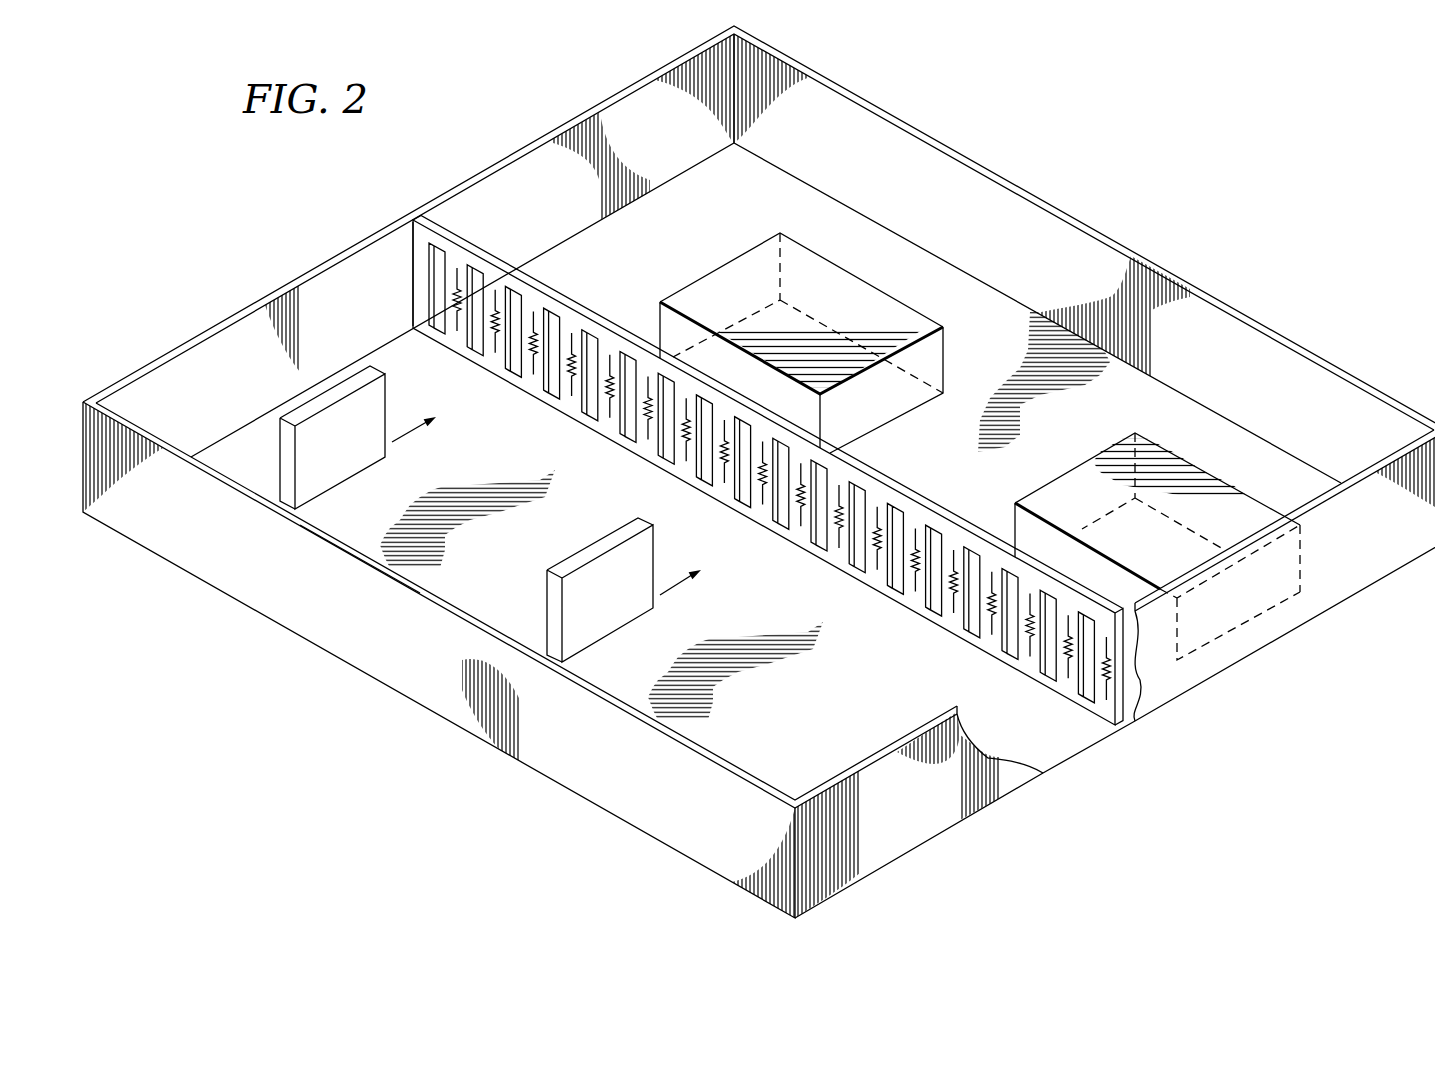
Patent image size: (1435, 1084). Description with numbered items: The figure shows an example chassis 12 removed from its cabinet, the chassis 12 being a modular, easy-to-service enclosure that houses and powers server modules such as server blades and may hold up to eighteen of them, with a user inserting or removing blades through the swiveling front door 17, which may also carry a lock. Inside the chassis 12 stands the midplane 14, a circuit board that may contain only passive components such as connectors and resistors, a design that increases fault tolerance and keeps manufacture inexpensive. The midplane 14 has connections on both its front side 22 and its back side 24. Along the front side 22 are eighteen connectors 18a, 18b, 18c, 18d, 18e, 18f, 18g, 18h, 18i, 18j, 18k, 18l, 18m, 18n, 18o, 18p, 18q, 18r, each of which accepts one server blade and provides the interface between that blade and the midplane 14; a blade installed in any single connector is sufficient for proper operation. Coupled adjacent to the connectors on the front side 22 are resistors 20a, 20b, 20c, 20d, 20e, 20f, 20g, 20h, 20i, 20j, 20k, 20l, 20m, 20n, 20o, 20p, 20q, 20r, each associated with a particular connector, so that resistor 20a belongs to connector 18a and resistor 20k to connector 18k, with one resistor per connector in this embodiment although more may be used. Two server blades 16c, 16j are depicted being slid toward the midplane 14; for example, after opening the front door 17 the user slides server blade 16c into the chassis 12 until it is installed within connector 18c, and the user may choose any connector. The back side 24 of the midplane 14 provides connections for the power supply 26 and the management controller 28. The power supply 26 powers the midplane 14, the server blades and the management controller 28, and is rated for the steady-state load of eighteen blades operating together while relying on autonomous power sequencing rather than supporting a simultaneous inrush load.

The chassis 12 is at (1076, 144).
The midplane 14 is at (418, 238).
The server blade 16c is at (330, 477).
The server blade 16j is at (596, 630).
The front door 17 is at (548, 770).
The connector 18a is at (431, 327).
The connector 18b is at (469, 349).
The connector 18c is at (507, 370).
The connector 18d is at (545, 392).
The connector 18e is at (583, 414).
The connector 18f is at (632, 353).
The connector 18g is at (660, 457).
The connector 18h is at (698, 479).
The connector 18i is at (737, 500).
The connector 18j is at (788, 444).
The connector 18k is at (813, 544).
The connector 18l is at (851, 565).
The connector 18m is at (894, 506).
The connector 18n is at (932, 528).
The connector 18o is at (971, 551).
The connector 18p is at (1010, 573).
The connector 18q is at (1042, 674).
The connector 18r is at (1080, 696).
The resistor 20a is at (457, 268).
The resistor 20b is at (495, 290).
The resistor 20c is at (533, 311).
The resistor 20d is at (572, 333).
The resistor 20e is at (610, 355).
The resistor 20f is at (647, 440).
The resistor 20g is at (686, 398).
The resistor 20h is at (724, 420).
The resistor 20i is at (762, 505).
The resistor 20j is at (801, 526).
The resistor 20k is at (839, 485).
The resistor 20l is at (877, 507).
The resistor 20m is at (915, 591).
The resistor 20n is at (954, 613).
The resistor 20o is at (992, 635).
The resistor 20p is at (1030, 593).
The resistor 20q is at (1068, 615).
The resistor 20r is at (1108, 665).
The front side 22 is at (420, 273).
The back side 24 is at (490, 252).
The power supply 26 is at (1207, 480).
The management controller 28 is at (806, 259).